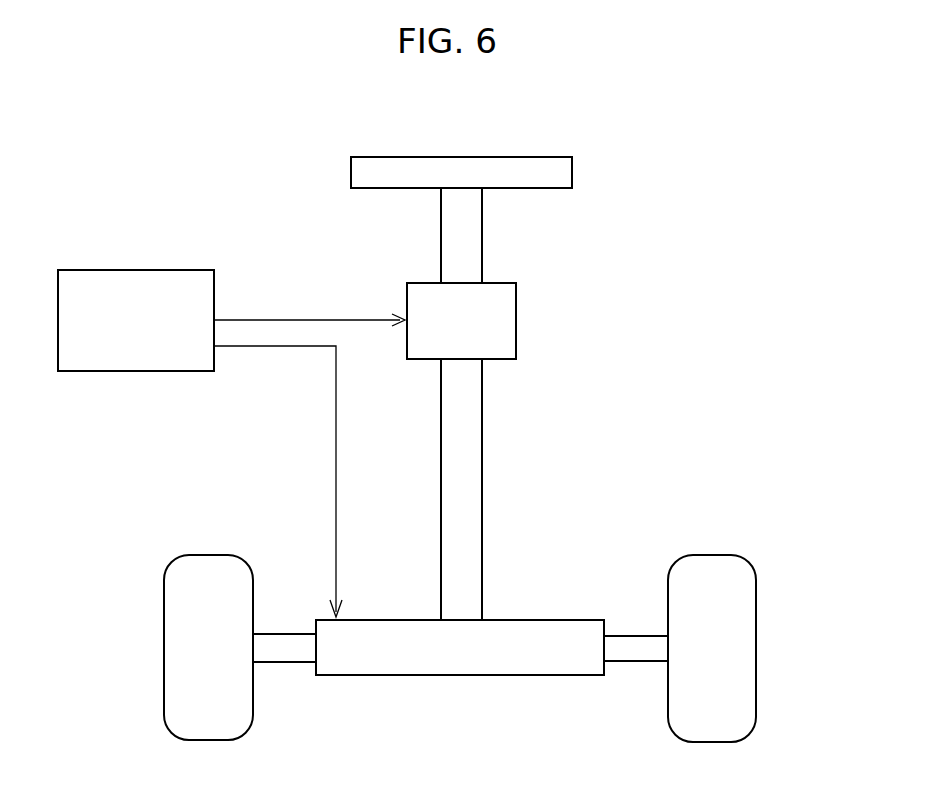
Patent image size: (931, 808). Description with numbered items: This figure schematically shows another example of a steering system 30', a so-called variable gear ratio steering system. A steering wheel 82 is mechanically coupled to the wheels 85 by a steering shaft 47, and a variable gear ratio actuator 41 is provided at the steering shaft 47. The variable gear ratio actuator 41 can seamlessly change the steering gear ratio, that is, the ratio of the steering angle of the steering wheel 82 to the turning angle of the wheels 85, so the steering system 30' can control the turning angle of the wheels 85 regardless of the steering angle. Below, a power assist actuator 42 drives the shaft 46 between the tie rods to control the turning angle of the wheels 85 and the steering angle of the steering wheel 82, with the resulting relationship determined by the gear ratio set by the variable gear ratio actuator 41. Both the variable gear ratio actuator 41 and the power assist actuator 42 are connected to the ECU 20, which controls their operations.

The steering system 30' is at (778, 162).
The steering wheel 82 is at (547, 157).
The ECU 20 is at (138, 270).
The variable gear ratio actuator 41 is at (516, 320).
The steering shaft 47 is at (482, 481).
The power assist actuator 42 is at (518, 675).
The shaft between the tie rods 46 is at (627, 636).
The wheels 85 is at (164, 620).